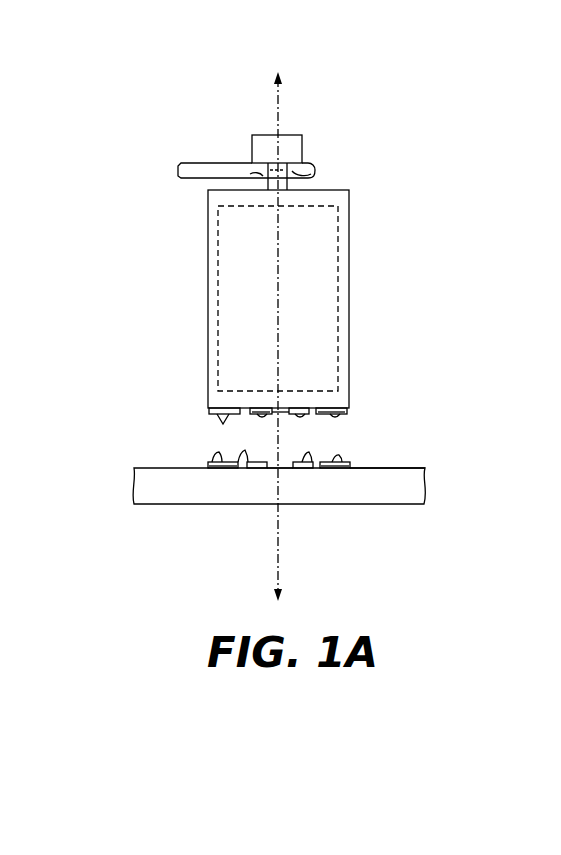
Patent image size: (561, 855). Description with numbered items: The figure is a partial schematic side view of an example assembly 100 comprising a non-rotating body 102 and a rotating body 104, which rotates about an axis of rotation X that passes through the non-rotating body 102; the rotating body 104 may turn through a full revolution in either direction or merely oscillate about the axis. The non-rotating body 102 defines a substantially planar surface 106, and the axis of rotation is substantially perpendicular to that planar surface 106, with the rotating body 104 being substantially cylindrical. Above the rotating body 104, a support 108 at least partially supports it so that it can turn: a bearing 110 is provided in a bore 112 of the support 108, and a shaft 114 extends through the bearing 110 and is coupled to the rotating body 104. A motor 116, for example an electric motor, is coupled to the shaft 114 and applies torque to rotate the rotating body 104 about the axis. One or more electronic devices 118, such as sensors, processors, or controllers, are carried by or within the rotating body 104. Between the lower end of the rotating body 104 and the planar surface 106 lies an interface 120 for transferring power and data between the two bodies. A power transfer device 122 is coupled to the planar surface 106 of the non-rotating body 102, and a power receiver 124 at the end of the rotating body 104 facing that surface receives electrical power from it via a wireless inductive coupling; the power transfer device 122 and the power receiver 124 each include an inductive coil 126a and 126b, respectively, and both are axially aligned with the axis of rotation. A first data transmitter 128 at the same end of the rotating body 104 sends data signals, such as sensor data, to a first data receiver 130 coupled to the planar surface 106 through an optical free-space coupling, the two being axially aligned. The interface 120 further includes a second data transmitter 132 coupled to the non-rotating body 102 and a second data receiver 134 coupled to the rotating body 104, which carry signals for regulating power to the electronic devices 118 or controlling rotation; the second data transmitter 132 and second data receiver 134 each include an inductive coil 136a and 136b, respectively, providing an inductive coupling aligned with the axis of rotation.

The assembly 100 is at (357, 100).
The non-rotating body 102 is at (408, 500).
The rotating body 104 is at (350, 191).
The planar surface 106 is at (426, 468).
The support 108 is at (181, 163).
The bearing 110 is at (305, 177).
The bore 112 is at (302, 161).
The shaft 114 is at (252, 162).
The motor 116 is at (296, 132).
The electronic devices 118 is at (313, 268).
The interface 120 is at (134, 421).
The power transfer device 122 is at (208, 464).
The power receiver 124 is at (209, 414).
The inductive coil 126a is at (216, 470).
The inductive coil 126b is at (253, 408).
The first data transmitter 128 is at (277, 415).
The first data receiver 130 is at (280, 466).
The second data transmitter 132 is at (245, 470).
The second data receiver 134 is at (223, 418).
The inductive coil 136a is at (256, 470).
The inductive coil 136b is at (262, 410).